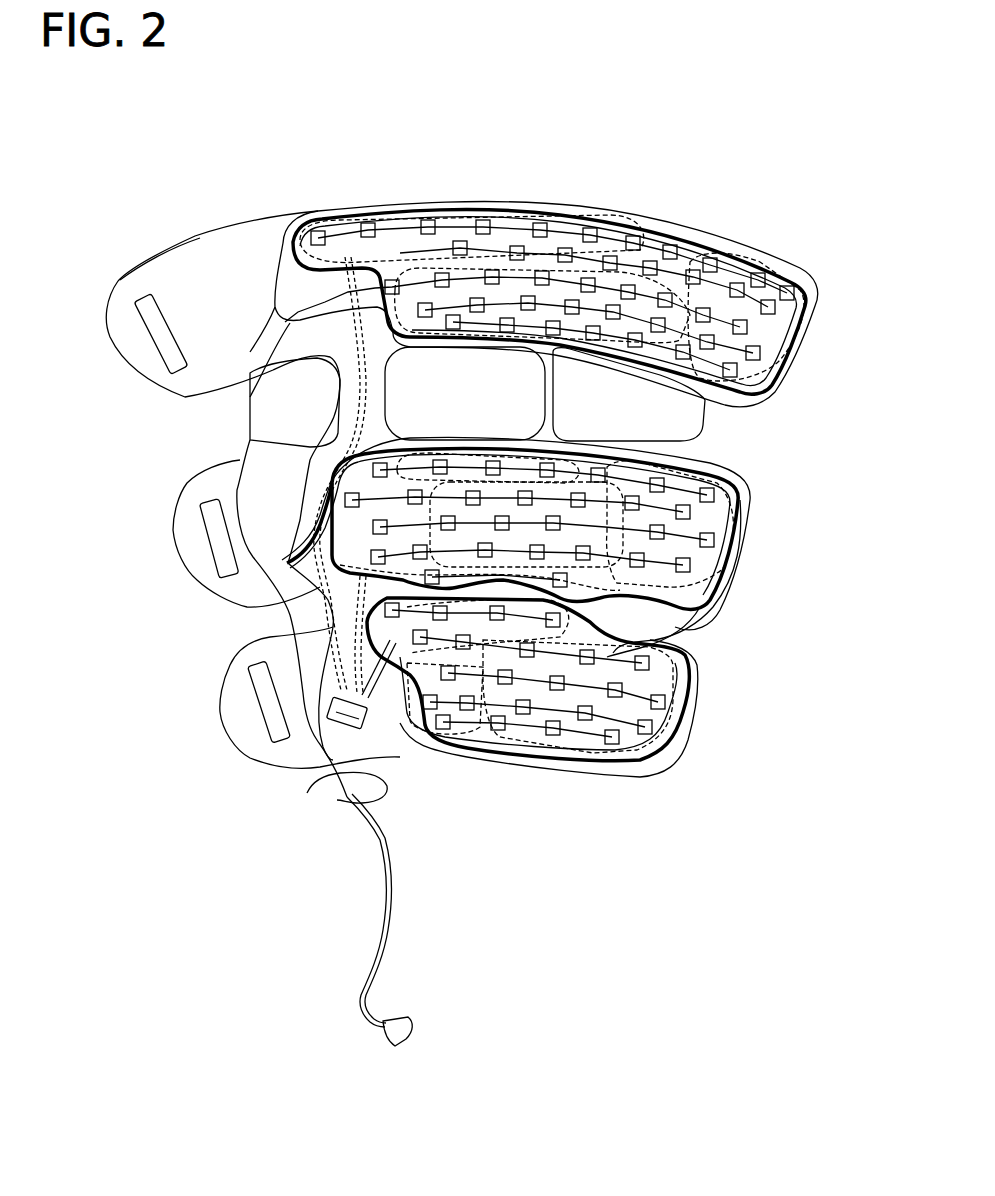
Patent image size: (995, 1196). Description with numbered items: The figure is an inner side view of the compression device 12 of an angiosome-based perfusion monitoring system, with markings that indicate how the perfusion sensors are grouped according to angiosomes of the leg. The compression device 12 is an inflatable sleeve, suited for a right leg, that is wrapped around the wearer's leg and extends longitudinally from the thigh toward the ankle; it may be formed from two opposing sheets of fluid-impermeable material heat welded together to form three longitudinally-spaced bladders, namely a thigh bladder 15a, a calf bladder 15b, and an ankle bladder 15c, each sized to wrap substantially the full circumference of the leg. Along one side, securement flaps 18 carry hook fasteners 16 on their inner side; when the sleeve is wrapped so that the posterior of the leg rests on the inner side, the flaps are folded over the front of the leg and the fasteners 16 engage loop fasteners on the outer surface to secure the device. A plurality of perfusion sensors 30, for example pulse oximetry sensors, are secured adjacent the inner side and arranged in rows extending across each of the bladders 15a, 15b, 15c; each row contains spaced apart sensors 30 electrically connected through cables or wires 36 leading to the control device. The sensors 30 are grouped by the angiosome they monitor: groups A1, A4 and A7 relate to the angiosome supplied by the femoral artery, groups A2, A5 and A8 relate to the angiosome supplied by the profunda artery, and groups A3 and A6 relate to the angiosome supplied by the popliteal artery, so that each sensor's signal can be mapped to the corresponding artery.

The compression device 12 is at (783, 158).
The thigh bladder 15a is at (412, 218).
The calf bladder 15b is at (367, 477).
The ankle bladder 15c is at (373, 623).
The fastener 16 is at (151, 334).
The securement flap 18 is at (118, 283).
The perfusion sensor 30 is at (482, 228).
The cable 36 is at (308, 793).
The sensor group A1 is at (705, 252).
The sensor group A2 is at (620, 333).
The sensor group A3 is at (760, 335).
The sensor group A4 is at (470, 462).
The sensor group A5 is at (617, 603).
The sensor group A6 is at (685, 480).
The sensor group A7 is at (463, 727).
The sensor group A8 is at (657, 717).